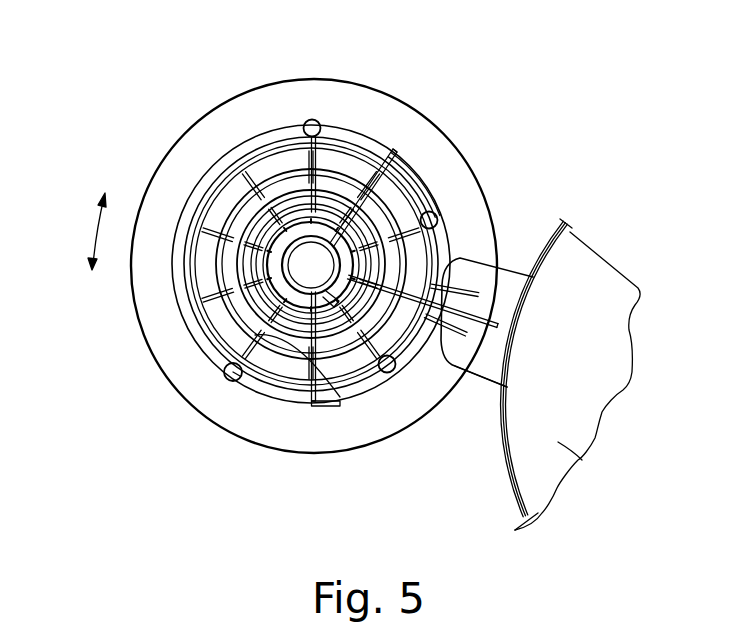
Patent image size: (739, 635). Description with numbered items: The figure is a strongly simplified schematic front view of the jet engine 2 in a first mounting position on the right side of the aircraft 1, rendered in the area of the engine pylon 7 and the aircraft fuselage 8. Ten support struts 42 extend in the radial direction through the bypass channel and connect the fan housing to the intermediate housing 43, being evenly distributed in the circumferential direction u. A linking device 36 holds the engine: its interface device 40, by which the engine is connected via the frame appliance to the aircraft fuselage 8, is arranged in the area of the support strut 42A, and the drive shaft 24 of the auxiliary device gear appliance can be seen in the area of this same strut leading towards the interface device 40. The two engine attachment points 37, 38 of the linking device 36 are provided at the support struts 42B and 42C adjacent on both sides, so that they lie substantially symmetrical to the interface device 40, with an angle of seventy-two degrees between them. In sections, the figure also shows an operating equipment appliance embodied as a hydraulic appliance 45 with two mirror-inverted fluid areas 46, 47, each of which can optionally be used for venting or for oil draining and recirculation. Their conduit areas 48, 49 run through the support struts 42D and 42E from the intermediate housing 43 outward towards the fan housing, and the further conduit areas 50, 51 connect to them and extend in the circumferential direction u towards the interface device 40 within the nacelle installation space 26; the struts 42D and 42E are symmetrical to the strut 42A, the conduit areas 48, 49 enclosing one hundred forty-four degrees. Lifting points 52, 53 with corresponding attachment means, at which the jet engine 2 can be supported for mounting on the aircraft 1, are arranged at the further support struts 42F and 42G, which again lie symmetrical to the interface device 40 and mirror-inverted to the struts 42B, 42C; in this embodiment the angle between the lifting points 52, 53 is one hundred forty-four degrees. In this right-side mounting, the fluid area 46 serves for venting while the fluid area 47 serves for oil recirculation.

The aircraft 1 is at (670, 359).
The jet engine 2 is at (213, 107).
The engine pylon 7 is at (491, 365).
The aircraft fuselage 8 is at (560, 441).
The drive shaft 24 is at (500, 313).
The nacelle installation space 26 is at (178, 135).
The linking device 36 is at (385, 375).
The engine attachment point 37 is at (391, 378).
The engine attachment point 38 is at (431, 209).
The interface device 40 is at (488, 312).
The support strut 42 is at (252, 193).
The support strut 42A is at (455, 286).
The support strut 42B is at (428, 394).
The support strut 42C is at (407, 188).
The support strut 42D is at (310, 373).
The support strut 42E is at (363, 177).
The support strut 42F is at (255, 335).
The support strut 42G is at (309, 168).
The intermediate housing 43 is at (222, 258).
The hydraulic appliance 45 is at (318, 409).
The fluid area 46 is at (358, 408).
The fluid area 47 is at (415, 163).
The conduit area 48 is at (312, 380).
The conduit area 49 is at (352, 198).
The further conduit area 50 is at (330, 408).
The further conduit area 51 is at (395, 152).
The lifting point 52 is at (226, 380).
The lifting point 53 is at (312, 120).
The circumferential direction u is at (97, 228).